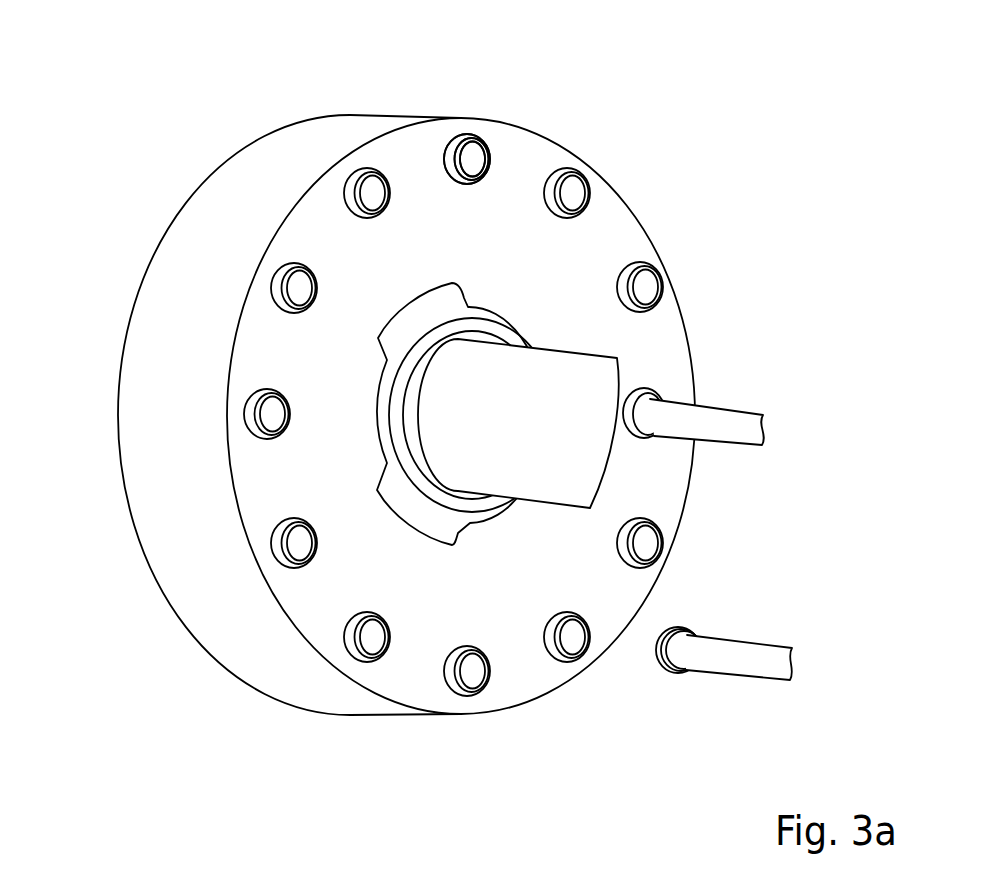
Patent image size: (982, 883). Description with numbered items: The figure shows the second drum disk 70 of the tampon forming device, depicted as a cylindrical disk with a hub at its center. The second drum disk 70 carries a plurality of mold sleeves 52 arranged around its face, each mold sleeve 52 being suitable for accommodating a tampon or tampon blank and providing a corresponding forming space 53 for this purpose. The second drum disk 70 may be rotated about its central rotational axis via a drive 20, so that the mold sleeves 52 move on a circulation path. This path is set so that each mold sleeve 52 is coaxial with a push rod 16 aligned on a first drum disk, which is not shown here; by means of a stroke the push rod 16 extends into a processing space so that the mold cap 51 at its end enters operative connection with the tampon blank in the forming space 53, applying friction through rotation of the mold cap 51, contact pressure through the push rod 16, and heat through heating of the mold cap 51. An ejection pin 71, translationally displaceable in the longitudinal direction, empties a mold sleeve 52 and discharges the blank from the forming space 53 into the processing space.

The second drum disk 70 is at (235, 203).
The mold sleeve 52 is at (473, 158).
The forming space 53 is at (644, 293).
The ejection pin 71 is at (415, 643).
The drive 20 is at (473, 432).
The push rod 16 is at (726, 418).
The mold cap 51 is at (665, 672).